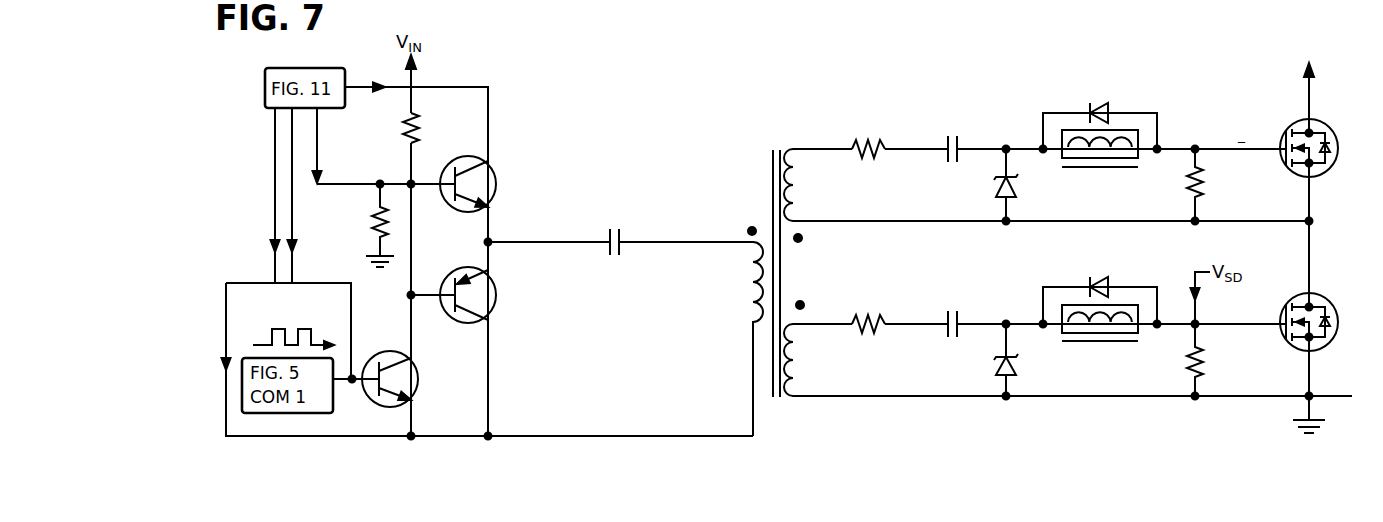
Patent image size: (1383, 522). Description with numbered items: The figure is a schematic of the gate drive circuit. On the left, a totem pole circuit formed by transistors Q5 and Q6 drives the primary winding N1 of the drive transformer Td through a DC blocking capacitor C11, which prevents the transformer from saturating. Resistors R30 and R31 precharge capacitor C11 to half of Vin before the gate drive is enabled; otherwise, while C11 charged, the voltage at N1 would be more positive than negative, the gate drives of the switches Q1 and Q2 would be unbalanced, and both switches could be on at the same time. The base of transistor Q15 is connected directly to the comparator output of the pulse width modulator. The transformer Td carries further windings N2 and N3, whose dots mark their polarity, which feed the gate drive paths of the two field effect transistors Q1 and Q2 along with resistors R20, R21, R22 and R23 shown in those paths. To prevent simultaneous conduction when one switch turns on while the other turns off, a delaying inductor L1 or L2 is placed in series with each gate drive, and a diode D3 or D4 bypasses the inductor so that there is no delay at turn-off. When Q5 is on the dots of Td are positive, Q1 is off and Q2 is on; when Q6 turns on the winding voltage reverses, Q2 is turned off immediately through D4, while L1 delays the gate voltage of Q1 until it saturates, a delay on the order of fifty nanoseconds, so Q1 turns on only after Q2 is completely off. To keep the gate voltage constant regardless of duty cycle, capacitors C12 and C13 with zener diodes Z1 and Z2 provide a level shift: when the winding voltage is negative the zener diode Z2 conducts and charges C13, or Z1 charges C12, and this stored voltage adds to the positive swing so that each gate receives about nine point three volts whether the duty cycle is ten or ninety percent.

The resistor R30 is at (435, 127).
The resistor R31 is at (362, 225).
The transistor Q5 is at (509, 177).
The transistor Q6 is at (495, 295).
The transistor Q15 is at (414, 379).
The capacitor C11 is at (620, 231).
The drive transformer Td is at (773, 253).
The primary winding N1 is at (743, 331).
The secondary winding N2 is at (813, 195).
The secondary winding N3 is at (808, 348).
The resistor R20 is at (869, 135).
The capacitor C12 is at (948, 144).
The zener diode Z1 is at (1019, 185).
The diode D3 is at (1100, 111).
The delaying inductor L1 is at (1100, 161).
The resistor R22 6.2K R22 is at (1194, 185).
The FET switch Q1 is at (1316, 127).
The resistor R21 47 R21 is at (869, 325).
The capacitor C13 is at (946, 318).
The zener diode Z2 is at (1048, 361).
The diode D4 is at (1100, 286).
The delaying inductor L2 is at (1100, 336).
The resistor R23 6.2K R23 is at (1223, 361).
The FET switch Q2 is at (1317, 327).